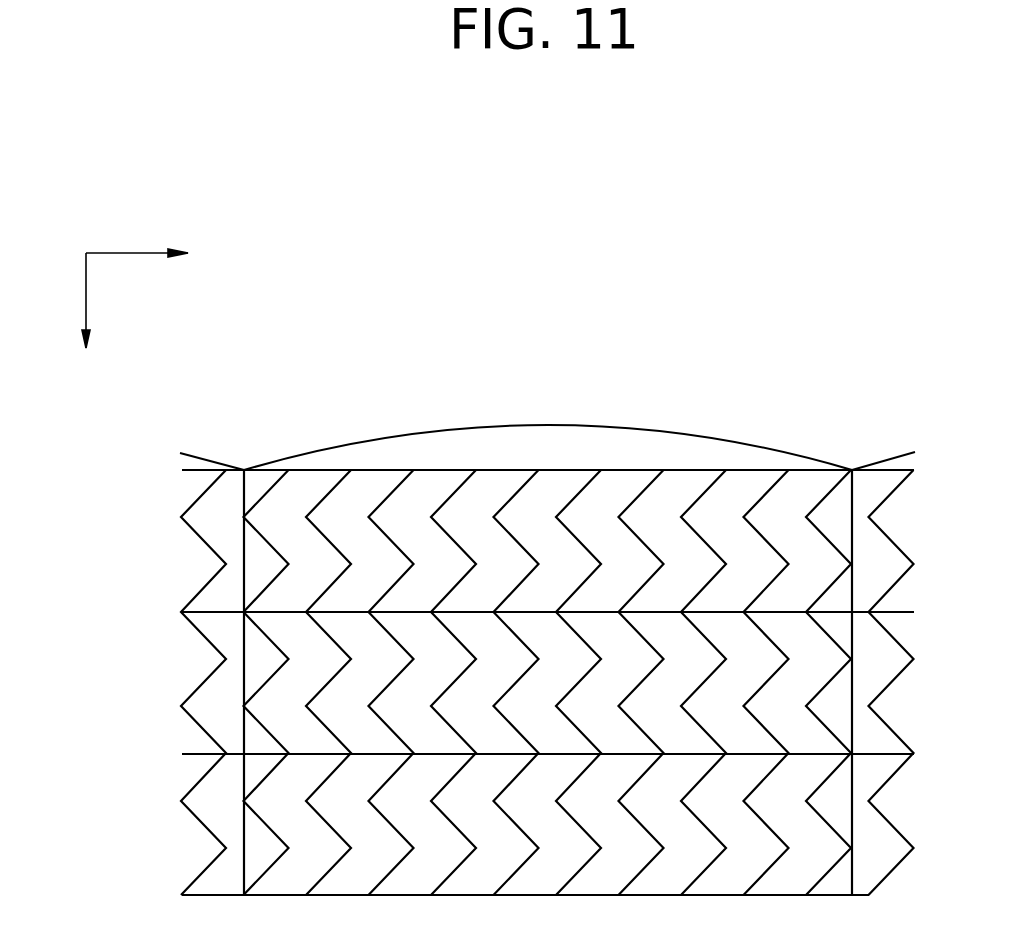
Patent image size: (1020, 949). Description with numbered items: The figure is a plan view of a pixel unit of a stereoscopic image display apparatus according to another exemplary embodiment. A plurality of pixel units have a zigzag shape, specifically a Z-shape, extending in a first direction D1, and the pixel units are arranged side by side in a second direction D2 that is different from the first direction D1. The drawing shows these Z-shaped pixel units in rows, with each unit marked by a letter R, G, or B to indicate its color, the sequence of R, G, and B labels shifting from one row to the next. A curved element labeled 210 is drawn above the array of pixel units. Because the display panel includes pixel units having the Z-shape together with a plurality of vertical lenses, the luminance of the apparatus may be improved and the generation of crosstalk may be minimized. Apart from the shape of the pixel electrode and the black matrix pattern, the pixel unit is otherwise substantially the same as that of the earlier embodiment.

The light blocking member / cover 210 is at (553, 435).
The first direction D1 is at (84, 321).
The second direction D2 is at (157, 251).
The red pixel R is at (533, 682).
The green pixel G is at (554, 682).
The blue pixel B is at (563, 682).